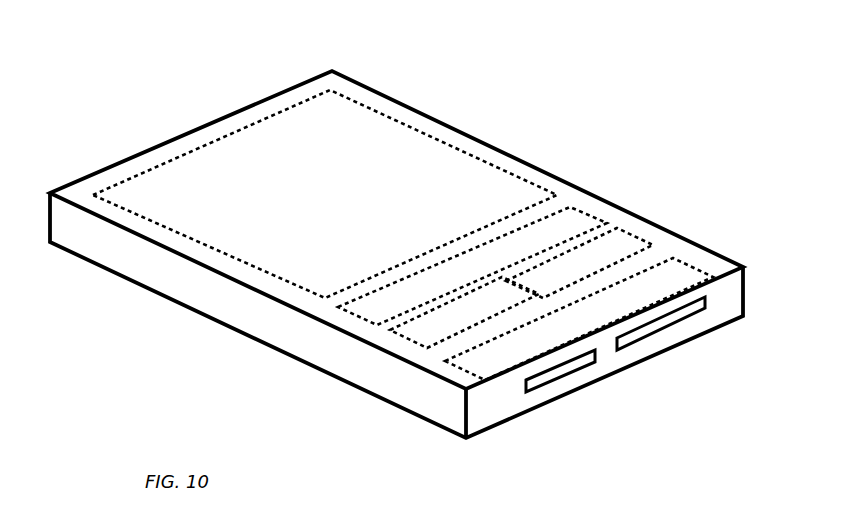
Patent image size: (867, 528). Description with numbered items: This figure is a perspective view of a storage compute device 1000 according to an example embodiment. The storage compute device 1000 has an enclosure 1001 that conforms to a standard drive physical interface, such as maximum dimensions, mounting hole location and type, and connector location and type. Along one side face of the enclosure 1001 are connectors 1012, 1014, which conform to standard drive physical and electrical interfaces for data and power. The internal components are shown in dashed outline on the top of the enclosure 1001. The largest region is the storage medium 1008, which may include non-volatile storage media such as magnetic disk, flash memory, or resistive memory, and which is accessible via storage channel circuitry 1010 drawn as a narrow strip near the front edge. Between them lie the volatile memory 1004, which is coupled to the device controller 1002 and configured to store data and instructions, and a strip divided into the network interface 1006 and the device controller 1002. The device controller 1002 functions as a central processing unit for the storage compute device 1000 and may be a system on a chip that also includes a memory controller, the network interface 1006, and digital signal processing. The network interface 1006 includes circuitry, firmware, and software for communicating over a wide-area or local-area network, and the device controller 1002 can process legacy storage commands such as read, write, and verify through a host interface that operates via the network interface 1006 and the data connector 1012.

The storage compute device 1000 is at (223, 326).
The enclosure 1001 is at (507, 154).
The device controller 1002 is at (643, 243).
The volatile memory 1004 is at (578, 208).
The network interface 1006 is at (405, 337).
The storage medium 1008 is at (318, 92).
The storage channel circuitry 1010 is at (697, 268).
The connector 1012 is at (565, 377).
The connector 1014 is at (675, 323).